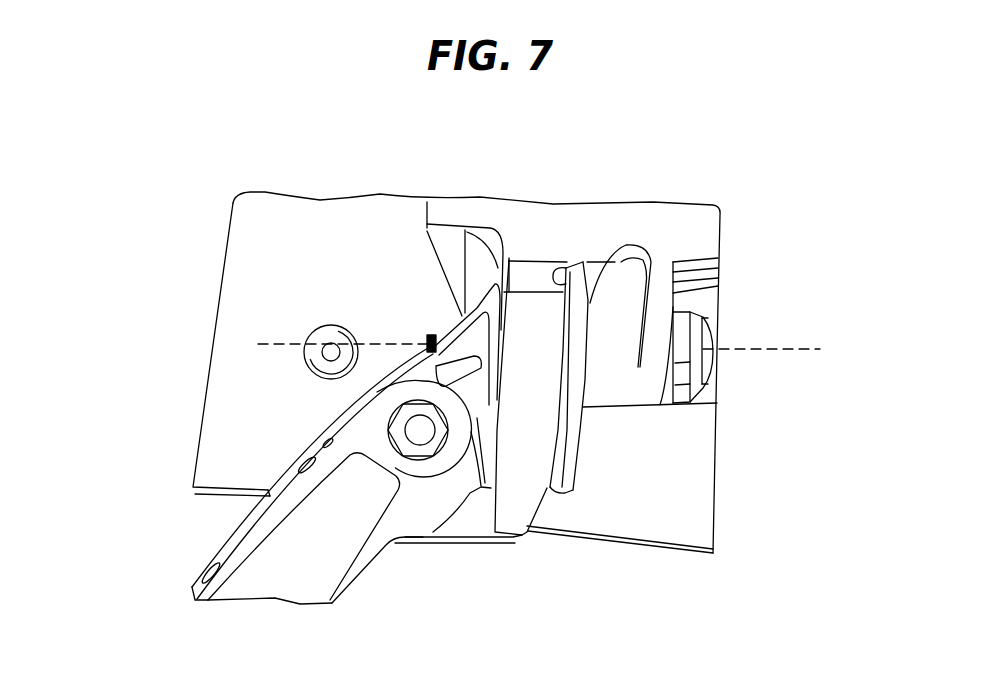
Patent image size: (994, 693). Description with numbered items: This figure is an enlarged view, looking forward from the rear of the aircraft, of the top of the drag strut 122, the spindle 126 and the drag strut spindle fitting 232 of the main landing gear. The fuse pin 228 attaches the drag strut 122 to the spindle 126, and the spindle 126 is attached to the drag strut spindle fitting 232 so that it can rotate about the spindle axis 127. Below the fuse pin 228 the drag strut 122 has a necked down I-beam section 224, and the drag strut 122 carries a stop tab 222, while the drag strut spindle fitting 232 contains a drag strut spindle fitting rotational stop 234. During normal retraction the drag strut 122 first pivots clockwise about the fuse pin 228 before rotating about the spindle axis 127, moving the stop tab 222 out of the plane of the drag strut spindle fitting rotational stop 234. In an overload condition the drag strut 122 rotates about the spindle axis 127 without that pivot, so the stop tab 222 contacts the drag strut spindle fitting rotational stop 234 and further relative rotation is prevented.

The drag strut 122 is at (205, 550).
The spindle 126 is at (473, 318).
The spindle axis 127 is at (278, 341).
The stop tab 222 is at (483, 541).
The necked down I-beam section 224 is at (283, 577).
The fuse pin 228 is at (420, 437).
The drag strut spindle fitting 232 is at (578, 460).
The drag strut spindle fitting rotational stop 234 is at (523, 495).